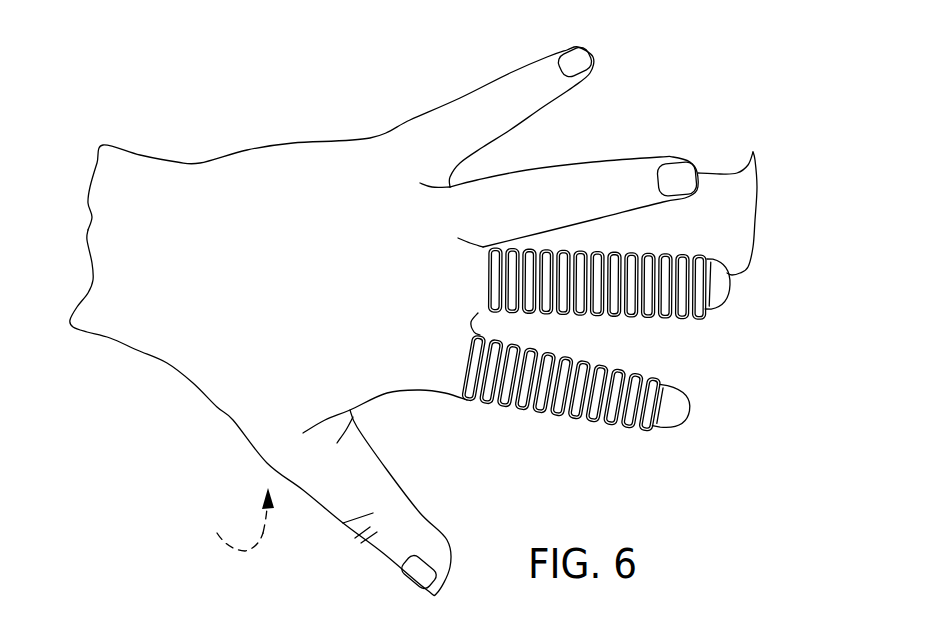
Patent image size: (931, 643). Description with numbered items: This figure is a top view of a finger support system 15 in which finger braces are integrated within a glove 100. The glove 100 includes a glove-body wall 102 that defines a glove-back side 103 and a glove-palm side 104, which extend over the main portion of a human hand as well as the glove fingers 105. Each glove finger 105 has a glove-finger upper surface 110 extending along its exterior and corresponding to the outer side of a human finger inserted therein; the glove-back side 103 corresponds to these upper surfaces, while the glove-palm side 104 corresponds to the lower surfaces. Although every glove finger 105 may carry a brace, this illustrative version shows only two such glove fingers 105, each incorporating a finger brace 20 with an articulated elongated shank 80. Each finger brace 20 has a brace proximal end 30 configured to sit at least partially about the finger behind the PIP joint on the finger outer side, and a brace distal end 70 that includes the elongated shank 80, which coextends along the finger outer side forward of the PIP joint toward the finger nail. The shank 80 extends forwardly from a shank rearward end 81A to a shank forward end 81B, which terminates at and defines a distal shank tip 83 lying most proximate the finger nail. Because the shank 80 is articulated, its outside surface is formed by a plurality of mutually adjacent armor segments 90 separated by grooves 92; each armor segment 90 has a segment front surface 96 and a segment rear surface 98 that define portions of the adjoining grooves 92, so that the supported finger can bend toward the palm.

The finger support system 15 is at (341, 98).
The glove 100 is at (289, 280).
The glove-back side 103 is at (289, 369).
The glove-body wall 102 is at (245, 412).
The glove-palm side 104 is at (232, 519).
The glove-finger upper surface 110 is at (552, 209).
The glove finger 105 is at (738, 201).
The elongated shank 80 is at (616, 265).
The shank rearward end 81A is at (497, 290).
The shank forward end 81B is at (697, 257).
The distal shank tip 83 is at (709, 277).
The finger brace 20 is at (667, 312).
The brace proximal end 30 is at (548, 399).
The brace distal end 70 is at (620, 399).
The segment rear surface 98 is at (540, 407).
The armor segment 90 is at (555, 420).
The segment front surface 96 is at (568, 407).
The groove 92 is at (628, 430).